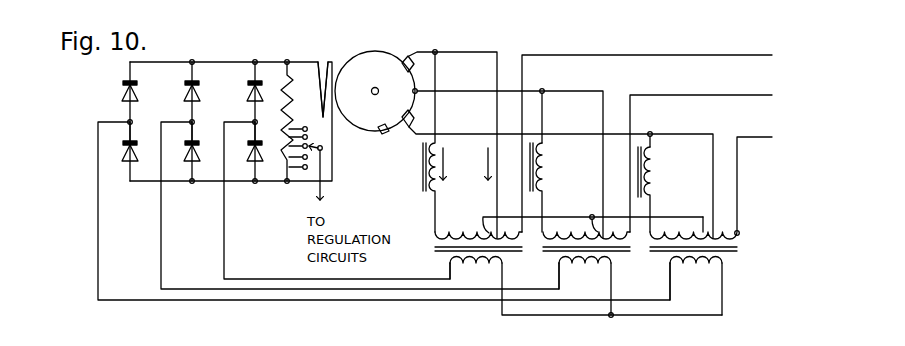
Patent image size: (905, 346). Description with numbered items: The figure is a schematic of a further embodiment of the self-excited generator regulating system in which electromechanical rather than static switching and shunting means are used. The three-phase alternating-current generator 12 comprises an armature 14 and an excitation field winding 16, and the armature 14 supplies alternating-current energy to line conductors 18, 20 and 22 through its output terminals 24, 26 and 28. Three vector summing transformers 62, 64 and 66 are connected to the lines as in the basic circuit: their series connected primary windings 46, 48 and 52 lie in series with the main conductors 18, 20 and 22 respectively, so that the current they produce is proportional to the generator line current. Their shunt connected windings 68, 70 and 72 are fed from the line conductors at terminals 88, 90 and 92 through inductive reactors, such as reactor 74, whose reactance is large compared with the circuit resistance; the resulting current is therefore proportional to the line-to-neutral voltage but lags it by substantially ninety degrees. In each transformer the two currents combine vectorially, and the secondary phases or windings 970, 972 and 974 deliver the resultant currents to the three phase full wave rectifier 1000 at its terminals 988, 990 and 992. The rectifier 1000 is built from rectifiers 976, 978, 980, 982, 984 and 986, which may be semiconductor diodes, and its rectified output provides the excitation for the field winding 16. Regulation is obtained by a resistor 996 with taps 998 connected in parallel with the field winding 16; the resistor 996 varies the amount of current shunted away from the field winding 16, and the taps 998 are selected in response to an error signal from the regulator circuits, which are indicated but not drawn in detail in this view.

The three phase full wave rectifier 1000 is at (259, 50).
The three-phase alternating-current generator 12 is at (383, 50).
The armature 14 is at (385, 133).
The excitation field winding 16 is at (331, 59).
The line conductor 18 is at (766, 51).
The line conductor 20 is at (766, 91).
The line conductor 22 is at (766, 132).
The output terminal 24 is at (416, 66).
The output terminal 26 is at (419, 89).
The output terminal 28 is at (417, 120).
The primary winding 46 is at (489, 213).
The primary winding 48 is at (596, 205).
The primary winding 52 is at (740, 232).
The vector summing transformer 62 is at (475, 192).
The vector summing transformer 64 is at (583, 192).
The vector summing transformer 66 is at (690, 197).
The shunt connected winding 68 is at (466, 234).
The shunt connected winding 70 is at (581, 234).
The shunt connected winding 72 is at (662, 238).
The inductive reactor 74 is at (423, 168).
The terminal 88 is at (439, 40).
The terminal 90 is at (548, 80).
The terminal 92 is at (650, 132).
The secondary winding 970 is at (586, 287).
The secondary winding 972 is at (585, 286).
The secondary winding 974 is at (696, 286).
The rectifier 976 is at (122, 90).
The rectifier 978 is at (185, 90).
The rectifier 980 is at (247, 90).
The rectifier 982 is at (125, 174).
The rectifier 984 is at (186, 174).
The rectifier 986 is at (248, 174).
The terminal 988 is at (124, 122).
The terminal 990 is at (187, 122).
The terminal 992 is at (249, 122).
The resistor 996 is at (283, 166).
The taps 998 is at (308, 167).